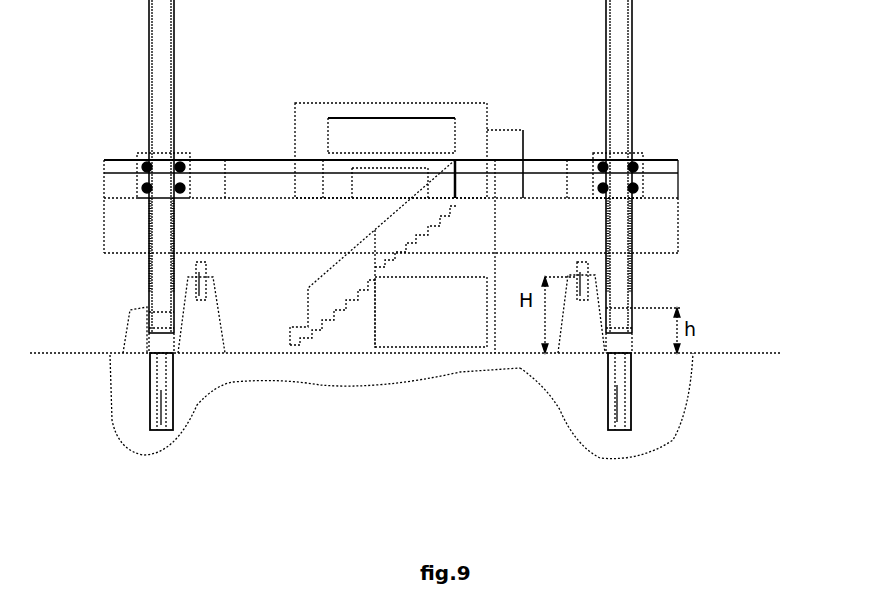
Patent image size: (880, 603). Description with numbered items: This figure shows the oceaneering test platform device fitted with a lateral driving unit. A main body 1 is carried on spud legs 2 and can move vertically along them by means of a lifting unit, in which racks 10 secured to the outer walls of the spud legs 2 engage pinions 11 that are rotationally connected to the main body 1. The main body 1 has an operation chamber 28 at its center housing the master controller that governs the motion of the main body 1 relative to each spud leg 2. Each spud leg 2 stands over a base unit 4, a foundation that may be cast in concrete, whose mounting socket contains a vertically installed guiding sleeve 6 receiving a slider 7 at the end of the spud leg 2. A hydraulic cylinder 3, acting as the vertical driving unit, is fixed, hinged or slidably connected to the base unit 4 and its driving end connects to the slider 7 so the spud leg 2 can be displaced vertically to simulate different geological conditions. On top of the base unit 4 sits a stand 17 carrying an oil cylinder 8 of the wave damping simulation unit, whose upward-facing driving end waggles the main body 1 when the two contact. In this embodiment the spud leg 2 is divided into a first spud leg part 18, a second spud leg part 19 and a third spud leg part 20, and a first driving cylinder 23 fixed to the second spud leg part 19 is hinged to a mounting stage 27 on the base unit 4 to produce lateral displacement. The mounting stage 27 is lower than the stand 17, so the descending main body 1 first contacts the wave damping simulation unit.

The main body 1 is at (655, 217).
The spud leg 2 is at (632, 125).
The hydraulic cylinder 3 is at (660, 430).
The base unit 4 is at (655, 400).
The guiding sleeve 6 is at (605, 360).
The slider 7 is at (602, 362).
The oil cylinder 8 is at (578, 263).
The rack 10 is at (632, 88).
The pinion 11 is at (645, 155).
The stand 17 is at (580, 335).
The first spud leg part 18 is at (600, 347).
The second spud leg part 19 is at (620, 318).
The third spud leg part 20 is at (622, 272).
The first driving cylinder 23 is at (680, 308).
The mounting stage 27 is at (650, 355).
The operation chamber 28 is at (470, 128).